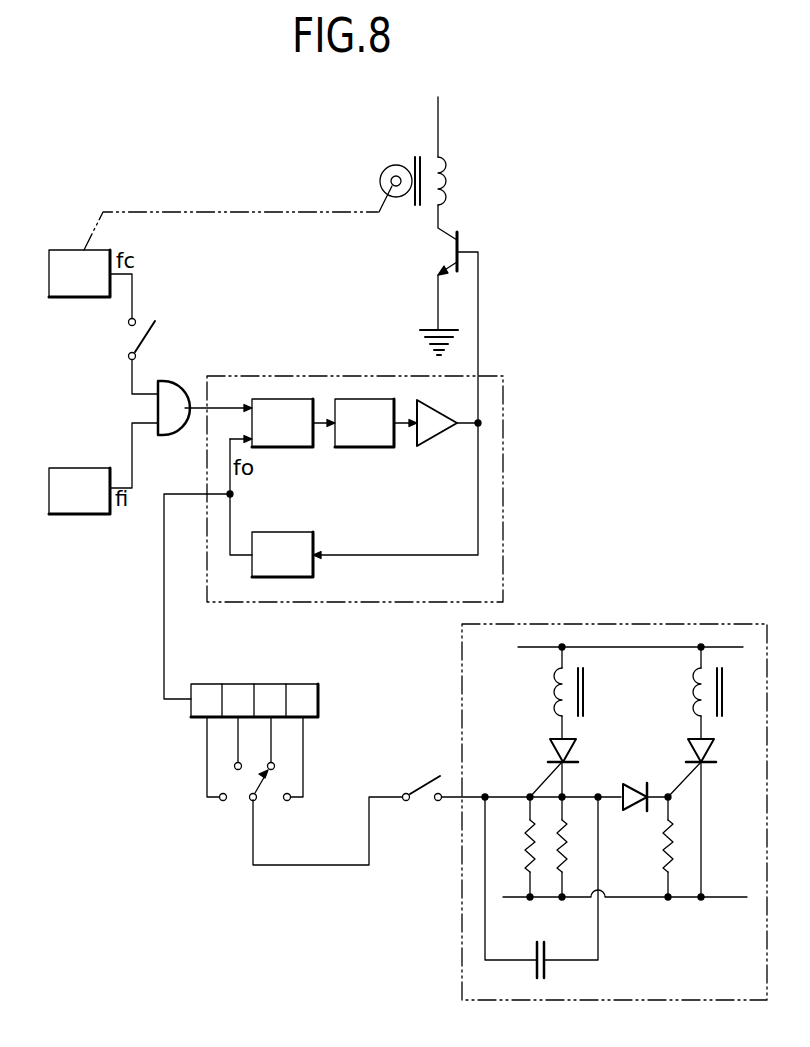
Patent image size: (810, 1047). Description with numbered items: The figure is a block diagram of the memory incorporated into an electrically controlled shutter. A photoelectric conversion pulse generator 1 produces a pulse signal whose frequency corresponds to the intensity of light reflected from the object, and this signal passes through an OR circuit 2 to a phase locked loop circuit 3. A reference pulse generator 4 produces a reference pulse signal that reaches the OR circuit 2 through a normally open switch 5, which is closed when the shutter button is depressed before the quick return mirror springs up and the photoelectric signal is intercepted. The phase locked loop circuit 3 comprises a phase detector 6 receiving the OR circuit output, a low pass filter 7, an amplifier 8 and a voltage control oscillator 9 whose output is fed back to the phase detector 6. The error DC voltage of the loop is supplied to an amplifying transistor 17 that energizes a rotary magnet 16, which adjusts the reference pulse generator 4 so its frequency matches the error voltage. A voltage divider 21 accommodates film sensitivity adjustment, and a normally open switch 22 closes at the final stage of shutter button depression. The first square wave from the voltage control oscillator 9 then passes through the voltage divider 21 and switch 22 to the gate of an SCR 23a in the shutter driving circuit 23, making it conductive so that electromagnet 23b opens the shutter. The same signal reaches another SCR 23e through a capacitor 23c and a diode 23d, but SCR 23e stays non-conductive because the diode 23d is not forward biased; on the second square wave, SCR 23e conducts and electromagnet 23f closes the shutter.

The photoelectric conversion pulse generator 1 is at (77, 498).
The OR circuit 2 is at (152, 407).
The phase locked loop circuit 3 is at (298, 376).
The reference pulse generator 4 is at (74, 258).
The switch 5 is at (130, 340).
The phase detector 6 is at (288, 433).
The low pass filter 7 is at (358, 435).
The amplifier 8 is at (428, 425).
The voltage control oscillator 9 is at (300, 567).
The rotary magnet 16 is at (412, 157).
The amplifying transistor 17 is at (448, 252).
The voltage divider 21 is at (265, 693).
The switch 22 is at (421, 781).
The shutter driving circuit 23 is at (607, 624).
The SCR 23a is at (553, 756).
The electromagnet 23b is at (553, 690).
The capacitor 23c is at (550, 967).
The diode 23d is at (631, 806).
The SCR 23e is at (691, 756).
The electromagnet 23f is at (694, 690).